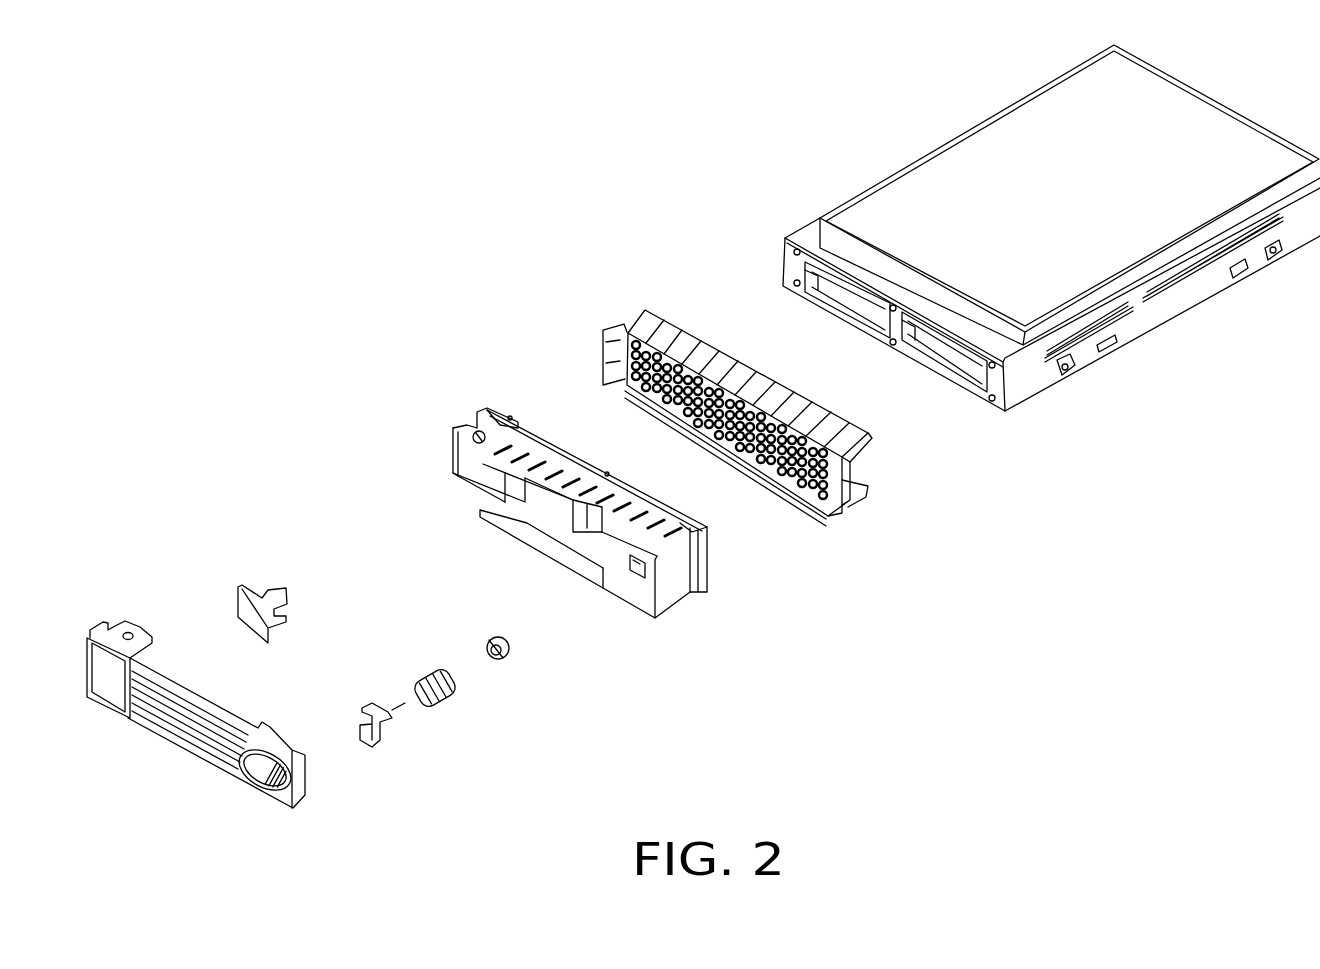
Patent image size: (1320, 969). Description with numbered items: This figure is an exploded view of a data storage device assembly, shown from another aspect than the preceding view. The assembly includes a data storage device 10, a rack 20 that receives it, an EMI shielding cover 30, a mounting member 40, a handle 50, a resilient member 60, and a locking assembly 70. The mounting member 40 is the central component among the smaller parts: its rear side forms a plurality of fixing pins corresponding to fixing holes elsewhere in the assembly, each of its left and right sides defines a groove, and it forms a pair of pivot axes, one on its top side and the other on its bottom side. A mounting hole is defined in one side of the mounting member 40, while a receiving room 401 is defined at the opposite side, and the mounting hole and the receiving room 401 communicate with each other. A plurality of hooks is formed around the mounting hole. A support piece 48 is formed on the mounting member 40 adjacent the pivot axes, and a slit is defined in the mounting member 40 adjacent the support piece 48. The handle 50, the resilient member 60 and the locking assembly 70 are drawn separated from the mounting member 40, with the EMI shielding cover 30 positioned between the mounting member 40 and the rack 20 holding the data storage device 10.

The data storage device 10 is at (1000, 183).
The rack 20 is at (1033, 377).
The EMI shielding cover 30 is at (648, 318).
The mounting member 40 is at (523, 448).
The support piece 48 is at (507, 473).
The receiving room 401 is at (643, 580).
The handle 50 is at (210, 740).
The resilient member 60 is at (242, 610).
The locking assembly 70 is at (472, 707).